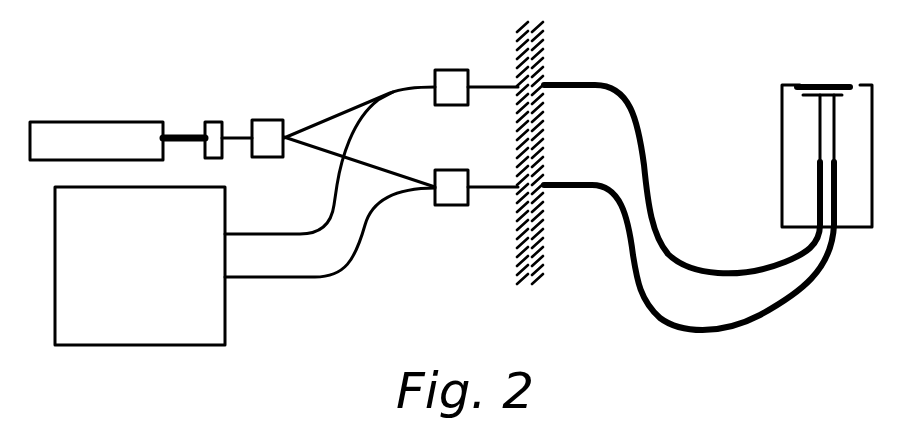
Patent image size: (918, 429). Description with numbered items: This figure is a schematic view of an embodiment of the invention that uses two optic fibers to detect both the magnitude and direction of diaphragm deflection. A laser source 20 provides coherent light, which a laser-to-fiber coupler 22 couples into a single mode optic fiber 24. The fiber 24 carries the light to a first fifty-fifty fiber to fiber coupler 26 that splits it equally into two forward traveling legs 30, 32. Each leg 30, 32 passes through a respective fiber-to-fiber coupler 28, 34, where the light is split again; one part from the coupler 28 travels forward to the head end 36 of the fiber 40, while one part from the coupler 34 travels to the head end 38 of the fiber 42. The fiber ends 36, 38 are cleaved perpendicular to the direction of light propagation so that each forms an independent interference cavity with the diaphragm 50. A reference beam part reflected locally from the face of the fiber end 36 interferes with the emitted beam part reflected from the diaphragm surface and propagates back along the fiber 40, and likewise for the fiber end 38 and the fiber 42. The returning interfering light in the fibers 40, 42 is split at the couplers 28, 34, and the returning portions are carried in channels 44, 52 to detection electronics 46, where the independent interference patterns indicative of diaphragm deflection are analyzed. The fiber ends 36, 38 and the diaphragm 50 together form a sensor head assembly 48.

The laser source 20 is at (98, 122).
The laser-to-fiber coupler 22 is at (213, 120).
The single mode optic fiber 24 is at (237, 132).
The first 50/50 fiber to fiber coupler 26 is at (287, 120).
The fiber-to-fiber coupler 28 is at (449, 70).
The forward traveling leg 30 is at (338, 112).
The forward traveling leg 32 is at (377, 165).
The fiber-to-fiber coupler 34 is at (453, 170).
The head end of fiber 36 is at (818, 120).
The head end of fiber 38 is at (840, 128).
The fiber 40 is at (718, 272).
The fiber 42 is at (722, 328).
The channel 44 is at (267, 232).
The detection electronics 46 is at (158, 272).
The sensor head assembly 48 is at (782, 150).
The diaphragm 50 is at (815, 85).
The channel 52 is at (273, 280).